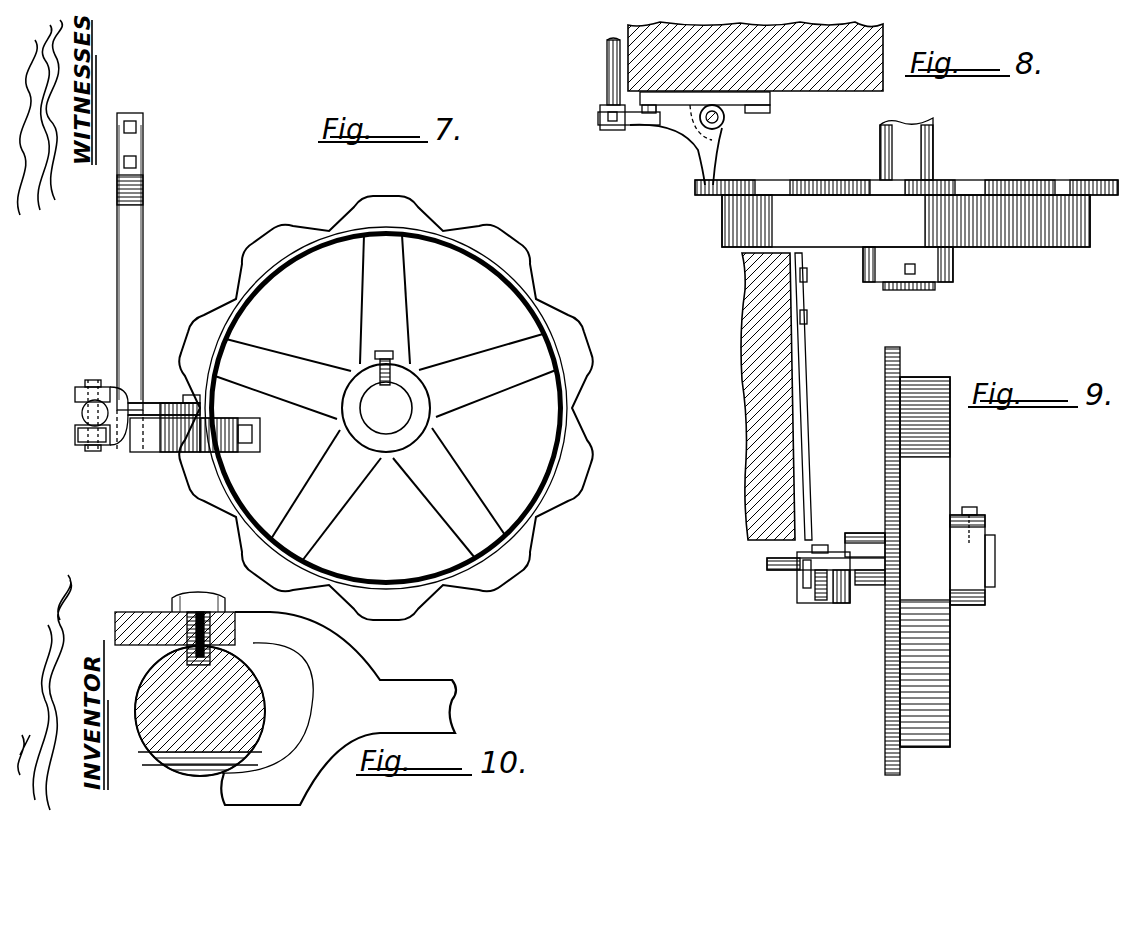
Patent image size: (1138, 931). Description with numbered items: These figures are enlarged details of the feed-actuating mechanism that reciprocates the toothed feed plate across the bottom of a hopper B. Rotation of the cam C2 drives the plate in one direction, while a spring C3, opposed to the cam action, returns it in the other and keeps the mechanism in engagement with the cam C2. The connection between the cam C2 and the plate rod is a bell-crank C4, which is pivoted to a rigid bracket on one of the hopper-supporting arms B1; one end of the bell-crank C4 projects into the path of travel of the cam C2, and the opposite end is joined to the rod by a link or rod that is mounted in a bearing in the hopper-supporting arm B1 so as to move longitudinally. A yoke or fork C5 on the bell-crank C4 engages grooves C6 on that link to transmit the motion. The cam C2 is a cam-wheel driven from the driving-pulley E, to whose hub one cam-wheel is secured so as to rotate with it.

In FIG. 7, the cam C2 is at (284, 233).
In FIG. 8, the cam C2 is at (790, 182).
In FIG. 9, the cam C2 is at (900, 503).
In FIG. 7, the spring C3 is at (144, 300).
In FIG. 8, the spring C3 is at (646, 112).
In FIG. 9, the spring C3 is at (813, 480).
In FIG. 7, the bell-crank C4 is at (82, 413).
In FIG. 10, the bell-crank C4 is at (384, 690).
In FIG. 8, the bell-crank C4 is at (605, 76).
In FIG. 9, the bell-crank C4 is at (770, 566).
In FIG. 7, the yoke or fork C5 is at (84, 432).
In FIG. 10, the yoke or fork C5 is at (139, 612).
In FIG. 8, the yoke or fork C5 is at (600, 120).
In FIG. 9, the yoke or fork C5 is at (820, 552).
In FIG. 10, the grooves C6 is at (225, 657).
In FIG. 9, the grooves C6 is at (812, 574).
In FIG. 7, the driving-pulley E is at (520, 303).
In FIG. 8, the driving-pulley E is at (1040, 232).
In FIG. 9, the hopper B is at (938, 645).
In FIG. 8, the hopper-supporting arm B1 is at (884, 44).
In FIG. 9, the hopper-supporting arm B1 is at (762, 400).